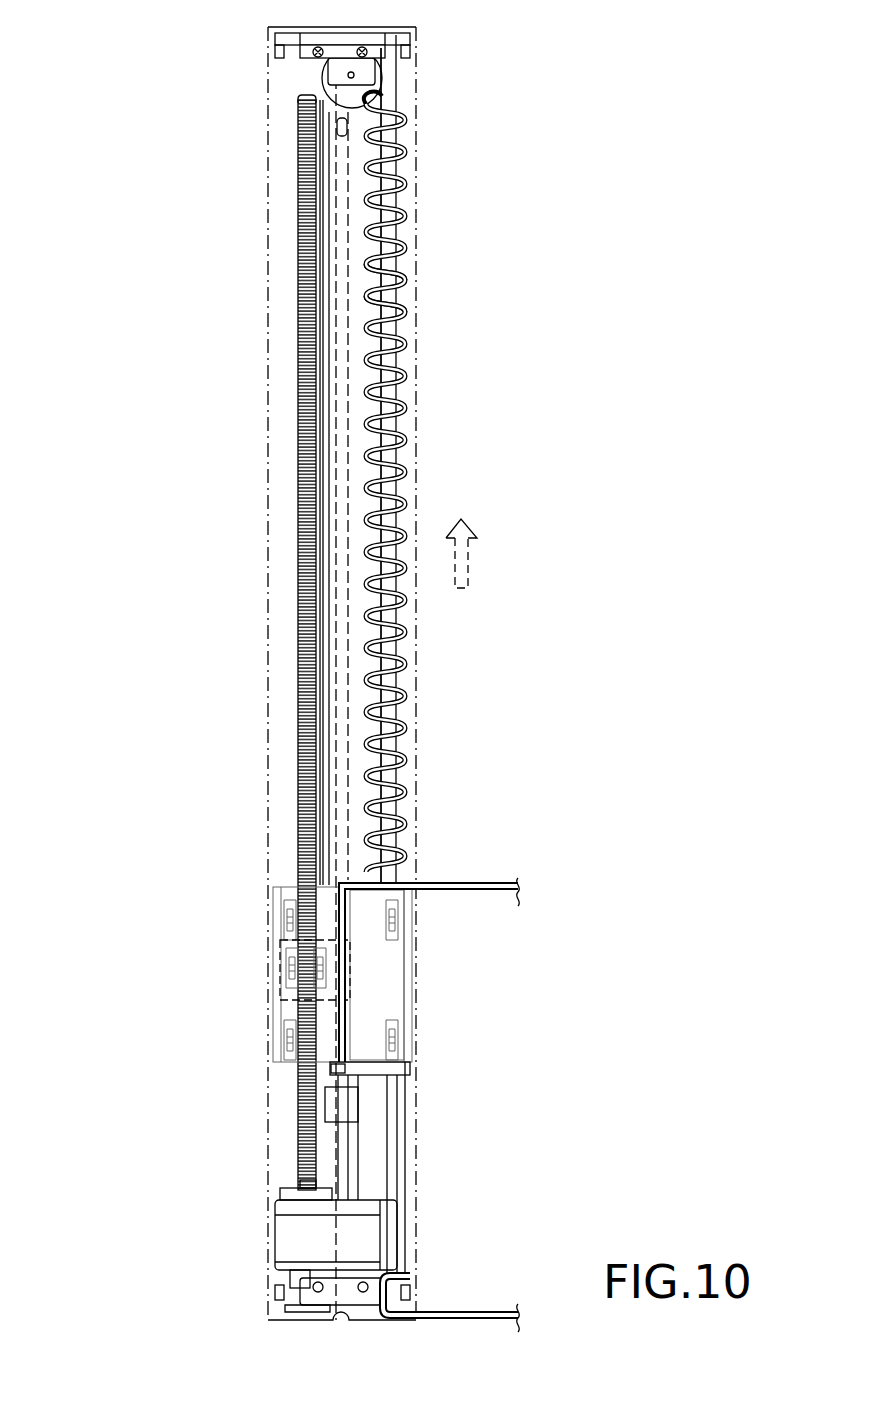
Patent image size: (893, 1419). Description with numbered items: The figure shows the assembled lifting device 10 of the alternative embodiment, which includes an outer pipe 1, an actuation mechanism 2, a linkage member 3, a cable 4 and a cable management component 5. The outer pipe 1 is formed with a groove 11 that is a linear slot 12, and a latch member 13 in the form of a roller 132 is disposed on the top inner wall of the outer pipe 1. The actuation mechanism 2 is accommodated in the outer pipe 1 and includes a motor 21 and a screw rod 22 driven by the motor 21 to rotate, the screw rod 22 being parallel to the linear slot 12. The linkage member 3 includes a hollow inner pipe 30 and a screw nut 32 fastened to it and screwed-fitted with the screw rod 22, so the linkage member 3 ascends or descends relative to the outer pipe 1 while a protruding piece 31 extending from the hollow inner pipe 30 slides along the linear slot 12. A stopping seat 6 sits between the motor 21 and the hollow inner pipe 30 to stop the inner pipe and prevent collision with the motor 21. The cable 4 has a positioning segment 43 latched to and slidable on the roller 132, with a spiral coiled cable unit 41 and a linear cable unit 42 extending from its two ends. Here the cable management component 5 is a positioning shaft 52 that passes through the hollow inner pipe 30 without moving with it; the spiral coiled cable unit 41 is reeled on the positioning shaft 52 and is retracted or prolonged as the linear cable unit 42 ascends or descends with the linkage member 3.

The lifting device 10 is at (77, 83).
The outer pipe 1 is at (282, 375).
The groove 11 is at (332, 257).
The linear slot 12 is at (333, 306).
The latch member 13 is at (316, 82).
The roller 132 is at (323, 67).
The cable 4 is at (508, 75).
The spiral coiled cable unit 41 is at (383, 152).
The linear cable unit 42 is at (398, 190).
The positioning segment 43 is at (380, 98).
The cable management component 5 is at (408, 299).
The positioning shaft 52 is at (393, 268).
The screw rod 22 is at (300, 1130).
The linkage member 3 is at (410, 959).
The hollow inner pipe 30 is at (388, 993).
The protruding piece 31 is at (370, 978).
The screw nut 32 is at (282, 946).
The stopping seat 6 is at (370, 1075).
The motor 21 is at (378, 1177).
The actuation mechanism 2 is at (394, 1146).